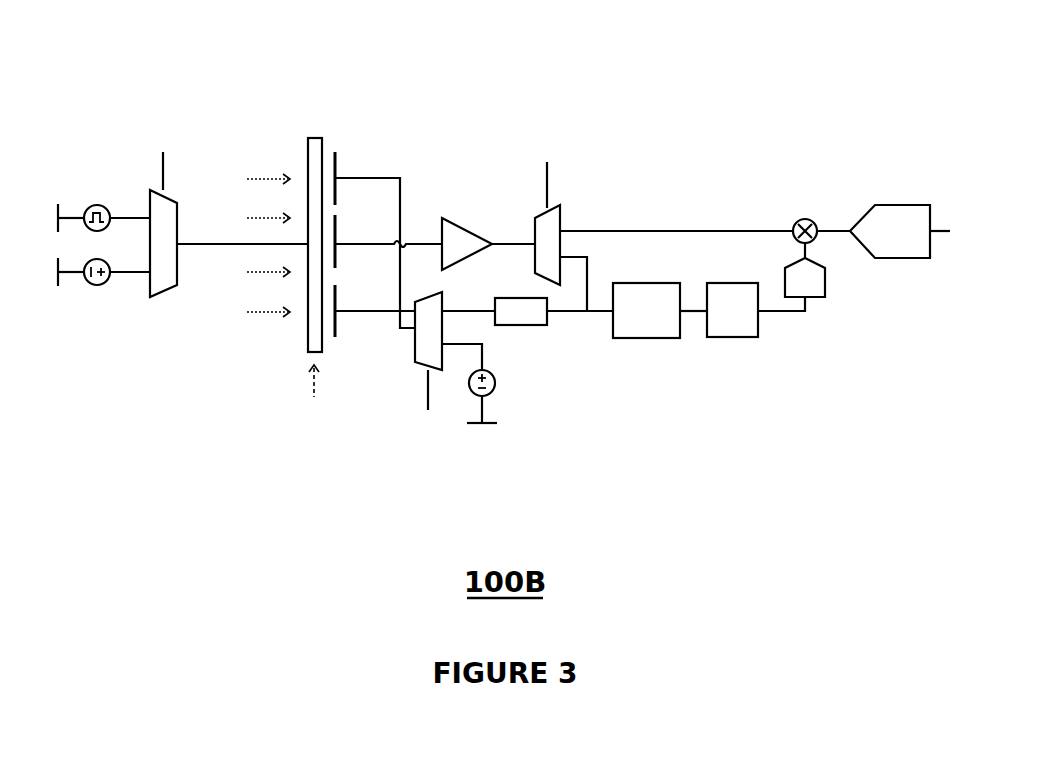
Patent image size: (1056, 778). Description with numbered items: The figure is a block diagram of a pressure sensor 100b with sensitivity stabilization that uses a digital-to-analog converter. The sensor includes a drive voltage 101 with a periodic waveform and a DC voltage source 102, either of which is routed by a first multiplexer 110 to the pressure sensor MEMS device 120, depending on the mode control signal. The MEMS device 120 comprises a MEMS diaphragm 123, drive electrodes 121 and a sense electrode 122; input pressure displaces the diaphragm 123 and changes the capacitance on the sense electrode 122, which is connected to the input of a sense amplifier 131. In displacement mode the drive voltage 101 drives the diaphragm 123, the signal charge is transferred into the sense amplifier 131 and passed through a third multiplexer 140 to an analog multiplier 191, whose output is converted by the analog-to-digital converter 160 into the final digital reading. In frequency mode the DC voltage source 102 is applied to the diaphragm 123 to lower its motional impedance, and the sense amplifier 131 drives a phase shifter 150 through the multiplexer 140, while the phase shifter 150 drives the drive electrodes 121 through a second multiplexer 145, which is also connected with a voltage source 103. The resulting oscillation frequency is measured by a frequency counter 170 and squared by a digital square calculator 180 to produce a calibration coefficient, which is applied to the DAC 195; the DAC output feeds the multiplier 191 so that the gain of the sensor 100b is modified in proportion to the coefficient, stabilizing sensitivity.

The pressure sensor 100b is at (531, 52).
The drive voltage 101 is at (95, 204).
The DC voltage source 102 is at (97, 293).
The voltage source 103 is at (500, 385).
The first multiplexer 110 is at (150, 188).
The pressure sensor MEMS device 120 is at (323, 197).
The drive electrodes 121 is at (350, 167).
The sense electrode 122 is at (348, 235).
The MEMS diaphragm 123 is at (303, 140).
The sense amplifier 131 is at (467, 216).
The third multiplexer 140 is at (534, 214).
The second multiplexer 145 is at (413, 366).
The phase shifter 150 is at (520, 328).
The analog-to-digital converter 160 is at (897, 203).
The frequency counter 170 is at (645, 345).
The digital square calculator 180 is at (732, 345).
The analog multiplier 191 is at (805, 217).
The DAC 195 is at (833, 282).